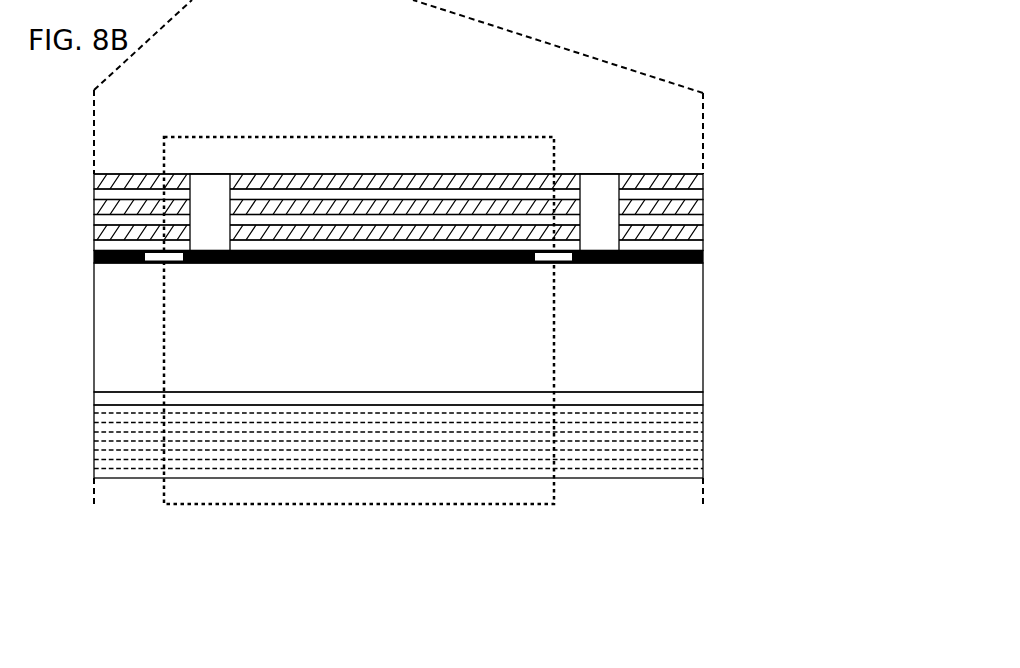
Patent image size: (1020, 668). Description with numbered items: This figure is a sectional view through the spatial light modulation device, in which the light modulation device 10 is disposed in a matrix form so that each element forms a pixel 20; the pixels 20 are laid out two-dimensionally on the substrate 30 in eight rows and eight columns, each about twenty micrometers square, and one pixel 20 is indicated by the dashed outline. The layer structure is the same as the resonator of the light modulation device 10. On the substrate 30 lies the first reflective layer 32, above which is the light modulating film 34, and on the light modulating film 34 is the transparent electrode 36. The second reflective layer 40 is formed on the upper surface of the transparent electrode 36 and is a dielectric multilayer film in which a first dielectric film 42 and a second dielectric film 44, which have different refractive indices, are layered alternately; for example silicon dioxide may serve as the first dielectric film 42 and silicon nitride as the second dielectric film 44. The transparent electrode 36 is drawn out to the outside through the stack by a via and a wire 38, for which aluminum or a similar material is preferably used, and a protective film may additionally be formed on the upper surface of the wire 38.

The light modulation device 10 is at (421, 588).
The pixel 20 is at (358, 137).
The substrate 30 is at (692, 436).
The first reflective layer 32 is at (692, 398).
The light modulating film 34 is at (692, 327).
The transparent electrode 36 is at (703, 256).
The wire 38 is at (599, 183).
The second reflective layer 40 is at (790, 60).
The first dielectric film 42 is at (703, 194).
The second dielectric film 44 is at (703, 182).